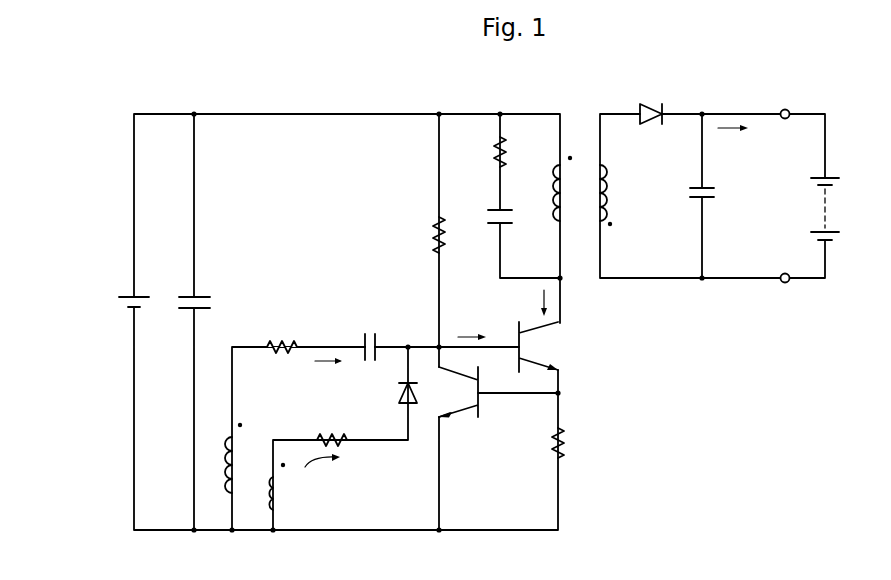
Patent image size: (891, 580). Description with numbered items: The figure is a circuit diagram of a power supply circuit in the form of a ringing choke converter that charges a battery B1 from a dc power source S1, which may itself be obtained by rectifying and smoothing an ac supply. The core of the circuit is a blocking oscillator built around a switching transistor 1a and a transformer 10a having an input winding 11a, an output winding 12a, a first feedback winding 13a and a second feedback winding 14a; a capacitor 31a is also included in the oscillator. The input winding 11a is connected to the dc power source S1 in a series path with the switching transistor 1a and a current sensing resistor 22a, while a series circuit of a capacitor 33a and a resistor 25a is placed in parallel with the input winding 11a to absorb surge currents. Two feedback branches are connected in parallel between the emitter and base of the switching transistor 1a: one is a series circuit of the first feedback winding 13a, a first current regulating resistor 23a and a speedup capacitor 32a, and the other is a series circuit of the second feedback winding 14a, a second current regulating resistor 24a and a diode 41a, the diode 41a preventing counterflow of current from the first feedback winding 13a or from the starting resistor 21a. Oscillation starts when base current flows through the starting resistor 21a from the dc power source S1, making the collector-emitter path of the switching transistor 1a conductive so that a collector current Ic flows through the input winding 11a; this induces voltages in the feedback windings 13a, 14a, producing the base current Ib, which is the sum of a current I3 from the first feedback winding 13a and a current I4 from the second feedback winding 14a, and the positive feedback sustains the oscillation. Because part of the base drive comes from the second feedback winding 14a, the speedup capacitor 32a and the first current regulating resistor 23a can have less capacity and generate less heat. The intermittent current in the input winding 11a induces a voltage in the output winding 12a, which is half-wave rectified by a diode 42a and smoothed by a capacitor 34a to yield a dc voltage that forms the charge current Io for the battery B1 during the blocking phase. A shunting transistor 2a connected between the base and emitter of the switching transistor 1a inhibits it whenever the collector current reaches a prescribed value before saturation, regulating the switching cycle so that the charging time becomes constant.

The dc power source S1 is at (128, 300).
The capacitor 31a is at (200, 303).
The first current regulating resistor 23a is at (278, 340).
The speedup capacitor 32a is at (368, 332).
The diode 41a is at (396, 393).
The second current regulating resistor 24a is at (333, 438).
The first feedback winding 13a is at (226, 463).
The second feedback winding 14a is at (283, 496).
The shunting transistor 2a is at (457, 397).
The current sensing resistor 22a is at (565, 441).
The switching transistor 1a is at (545, 345).
The starting resistor 21a is at (436, 240).
The resistor 25a is at (495, 152).
The capacitor 33a is at (493, 227).
The input winding 11a is at (553, 187).
The transformer 10a is at (581, 182).
The output winding 12a is at (612, 192).
The diode 42a is at (648, 107).
The capacitor 34a is at (710, 197).
The battery B1 is at (833, 208).
The current I3 is at (328, 374).
The current I4 is at (330, 473).
The base current Ib is at (472, 325).
The collector current Ic is at (531, 299).
The charge current Io is at (733, 141).